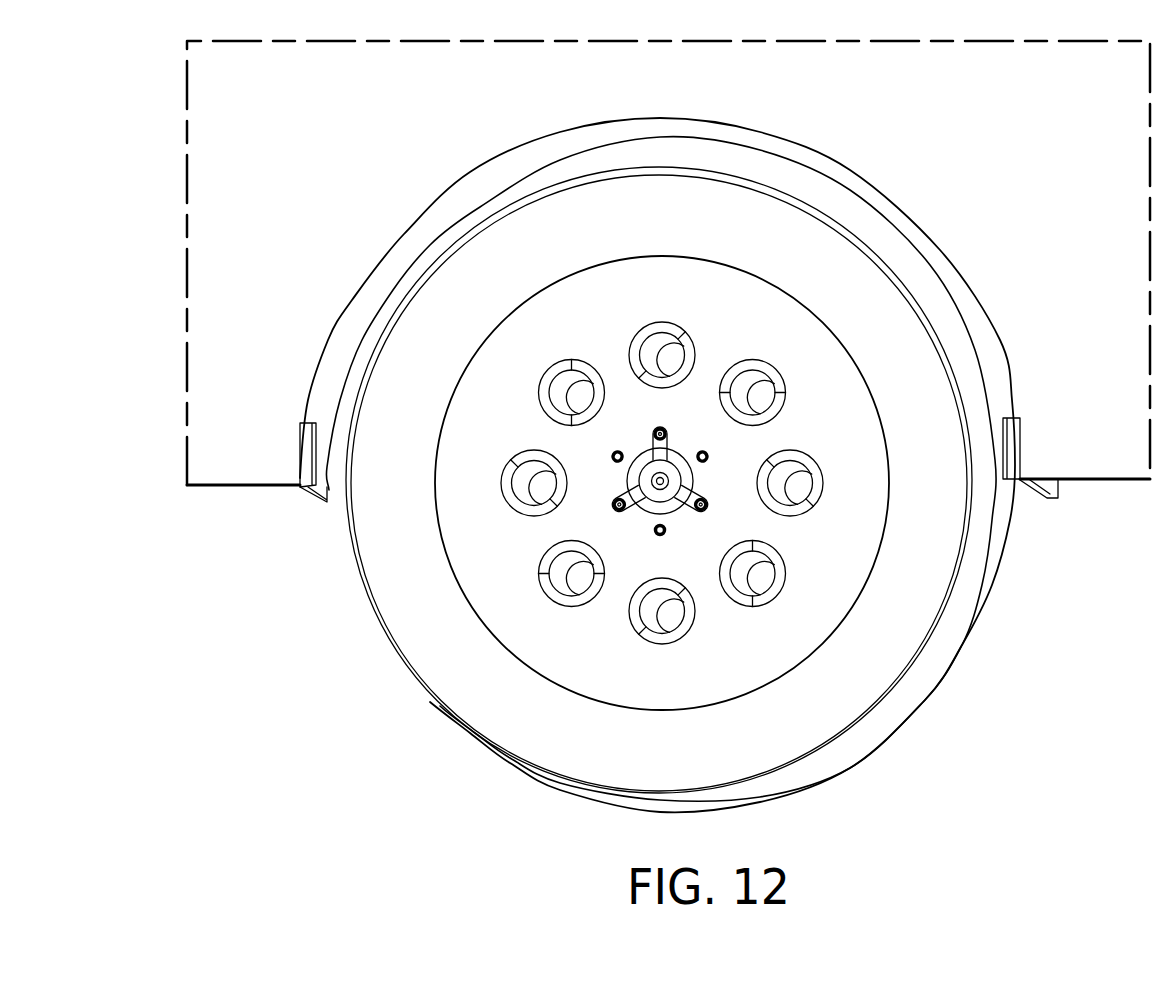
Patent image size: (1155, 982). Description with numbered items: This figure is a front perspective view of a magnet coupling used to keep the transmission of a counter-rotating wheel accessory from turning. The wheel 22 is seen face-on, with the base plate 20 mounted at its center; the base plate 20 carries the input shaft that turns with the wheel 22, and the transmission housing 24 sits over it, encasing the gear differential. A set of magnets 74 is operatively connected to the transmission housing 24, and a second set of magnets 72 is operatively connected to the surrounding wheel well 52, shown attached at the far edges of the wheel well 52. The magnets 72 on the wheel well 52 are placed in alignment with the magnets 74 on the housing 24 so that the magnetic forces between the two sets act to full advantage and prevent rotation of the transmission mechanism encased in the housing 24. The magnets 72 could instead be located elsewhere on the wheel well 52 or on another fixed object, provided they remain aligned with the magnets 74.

The wheel well 52 is at (992, 326).
The set of magnets 72 is at (305, 494).
The wheel 22 is at (818, 600).
The base plate 20 is at (722, 517).
The housing 24 is at (658, 506).
The set of magnets 74 is at (640, 465).